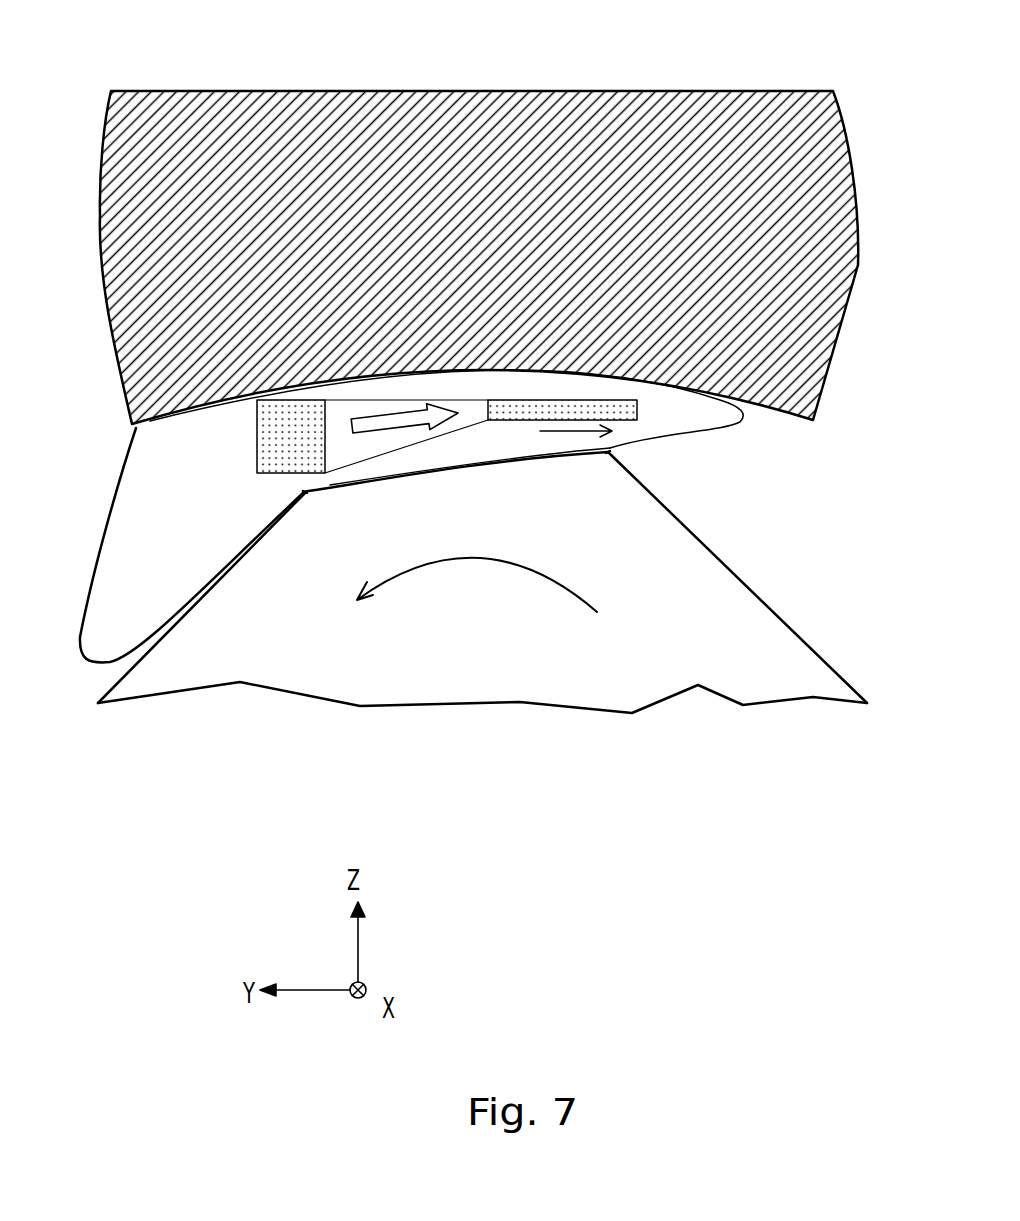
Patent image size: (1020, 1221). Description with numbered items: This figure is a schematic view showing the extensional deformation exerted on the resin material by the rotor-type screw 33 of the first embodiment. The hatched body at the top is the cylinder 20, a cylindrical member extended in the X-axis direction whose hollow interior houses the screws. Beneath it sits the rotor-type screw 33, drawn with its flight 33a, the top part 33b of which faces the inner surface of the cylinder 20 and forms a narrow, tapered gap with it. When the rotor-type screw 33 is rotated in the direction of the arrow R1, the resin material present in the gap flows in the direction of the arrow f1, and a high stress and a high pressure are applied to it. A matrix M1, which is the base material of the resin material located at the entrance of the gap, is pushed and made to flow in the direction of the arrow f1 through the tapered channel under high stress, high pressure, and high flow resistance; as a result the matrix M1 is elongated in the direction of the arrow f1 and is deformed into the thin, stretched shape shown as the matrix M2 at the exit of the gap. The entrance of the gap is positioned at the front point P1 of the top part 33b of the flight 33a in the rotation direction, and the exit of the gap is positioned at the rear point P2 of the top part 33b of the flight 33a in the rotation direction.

The cylinder 20 is at (440, 103).
The rotor-type screw 33 is at (752, 780).
The flight 33a is at (615, 458).
The top part 33b is at (533, 441).
The matrix M1 is at (280, 430).
The matrix M2 is at (580, 407).
The front point P1 is at (307, 490).
The rear point P2 is at (615, 442).
The arrow f1 is at (396, 435).
The arrow R1 is at (477, 585).